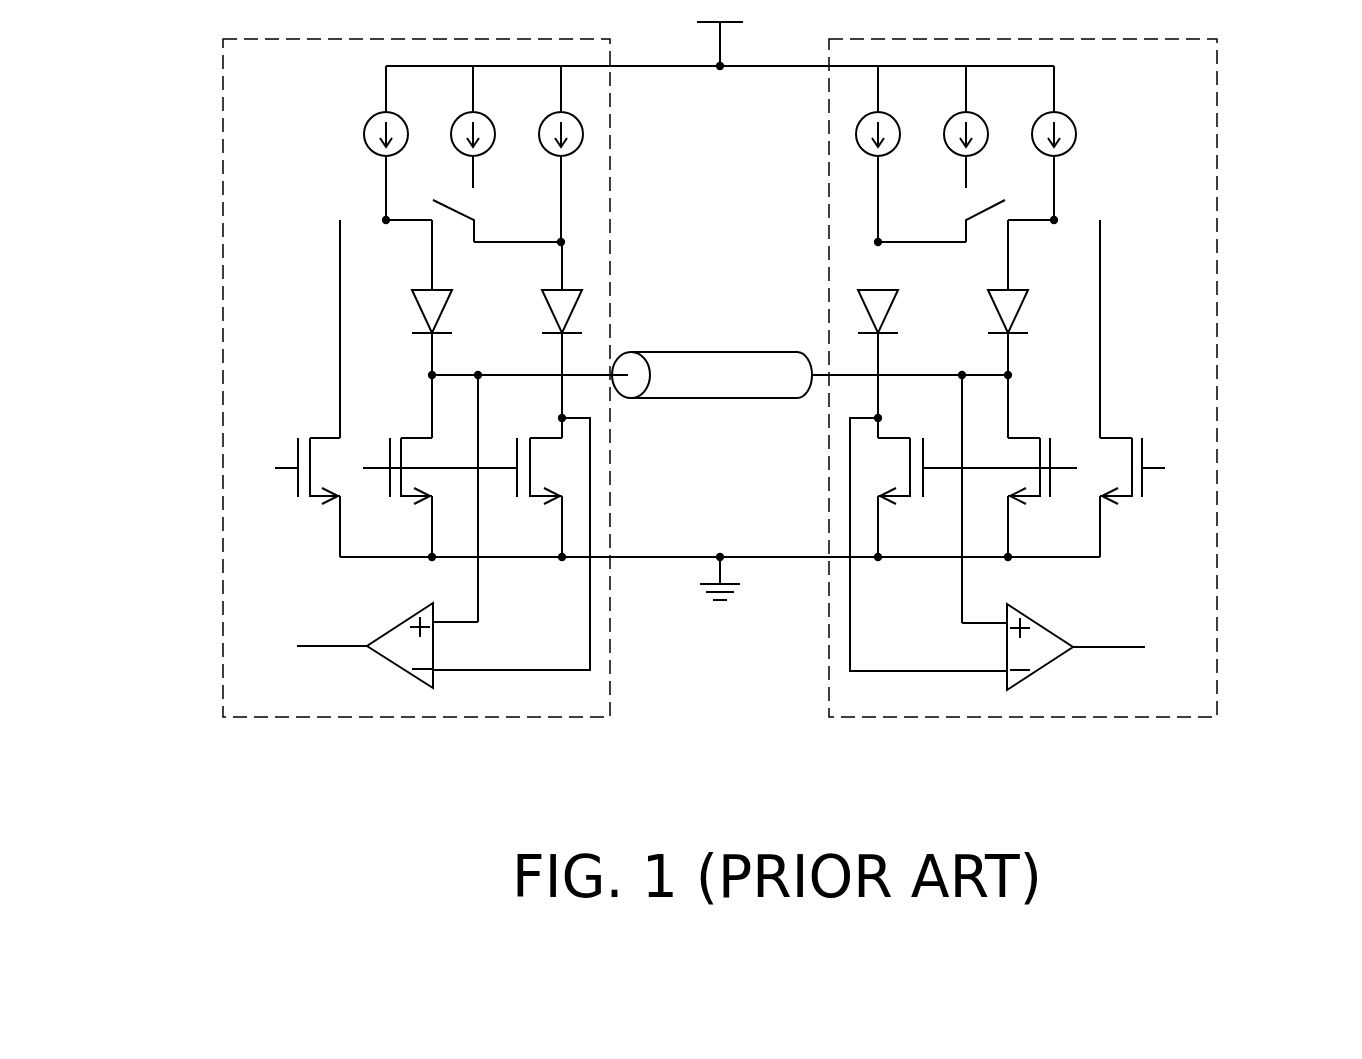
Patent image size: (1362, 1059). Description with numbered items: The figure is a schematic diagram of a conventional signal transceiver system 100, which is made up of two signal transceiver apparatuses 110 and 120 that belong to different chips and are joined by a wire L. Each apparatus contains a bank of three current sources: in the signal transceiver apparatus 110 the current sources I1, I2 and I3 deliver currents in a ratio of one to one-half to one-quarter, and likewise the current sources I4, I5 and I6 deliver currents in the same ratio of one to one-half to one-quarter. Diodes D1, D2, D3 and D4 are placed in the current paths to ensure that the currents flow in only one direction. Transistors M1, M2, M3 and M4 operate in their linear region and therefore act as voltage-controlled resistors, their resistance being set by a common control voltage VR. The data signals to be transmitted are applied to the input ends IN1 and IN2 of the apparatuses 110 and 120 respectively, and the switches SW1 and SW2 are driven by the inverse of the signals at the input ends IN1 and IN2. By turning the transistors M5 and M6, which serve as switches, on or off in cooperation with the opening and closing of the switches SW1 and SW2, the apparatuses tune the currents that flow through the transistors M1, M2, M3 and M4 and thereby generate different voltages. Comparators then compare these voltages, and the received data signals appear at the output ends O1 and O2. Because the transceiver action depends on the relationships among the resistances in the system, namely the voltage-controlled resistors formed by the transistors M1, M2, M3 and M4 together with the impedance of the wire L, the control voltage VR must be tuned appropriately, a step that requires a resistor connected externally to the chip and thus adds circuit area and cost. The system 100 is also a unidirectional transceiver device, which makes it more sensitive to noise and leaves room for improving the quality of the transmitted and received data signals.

The signal transceiver system 100 is at (1318, 799).
The signal transceiver apparatus 110 is at (223, 100).
The signal transceiver apparatus 120 is at (1217, 73).
The current source I1 is at (365, 143).
The current source I2 is at (456, 127).
The current source I3 is at (544, 154).
The current source I4 is at (1075, 143).
The current source I5 is at (985, 127).
The current source I6 is at (898, 154).
The switch SW1 is at (448, 213).
The switch SW2 is at (987, 217).
The diode D1 is at (414, 308).
The diode D2 is at (542, 315).
The diode D3 is at (901, 314).
The diode D4 is at (1028, 314).
The transistor M1 is at (429, 466).
The transistor M2 is at (1007, 475).
The transistor M3 is at (545, 471).
The transistor M4 is at (890, 471).
The transistor M5 is at (315, 494).
The transistor M6 is at (1126, 494).
The wire L is at (713, 352).
The voltage VR is at (718, 468).
The input end IN1 is at (264, 469).
The input end IN2 is at (1176, 472).
The output end O1 is at (997, 647).
The output end O2 is at (443, 643).